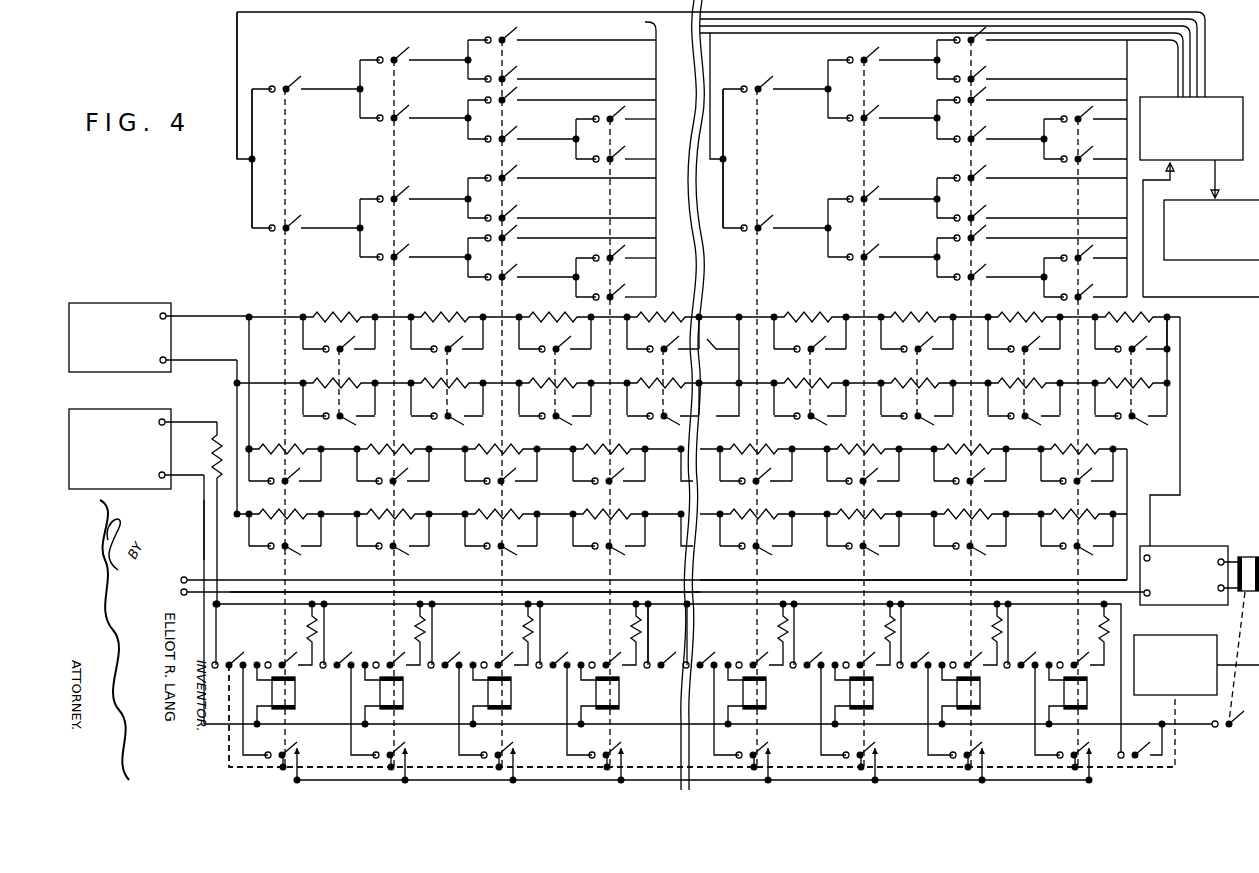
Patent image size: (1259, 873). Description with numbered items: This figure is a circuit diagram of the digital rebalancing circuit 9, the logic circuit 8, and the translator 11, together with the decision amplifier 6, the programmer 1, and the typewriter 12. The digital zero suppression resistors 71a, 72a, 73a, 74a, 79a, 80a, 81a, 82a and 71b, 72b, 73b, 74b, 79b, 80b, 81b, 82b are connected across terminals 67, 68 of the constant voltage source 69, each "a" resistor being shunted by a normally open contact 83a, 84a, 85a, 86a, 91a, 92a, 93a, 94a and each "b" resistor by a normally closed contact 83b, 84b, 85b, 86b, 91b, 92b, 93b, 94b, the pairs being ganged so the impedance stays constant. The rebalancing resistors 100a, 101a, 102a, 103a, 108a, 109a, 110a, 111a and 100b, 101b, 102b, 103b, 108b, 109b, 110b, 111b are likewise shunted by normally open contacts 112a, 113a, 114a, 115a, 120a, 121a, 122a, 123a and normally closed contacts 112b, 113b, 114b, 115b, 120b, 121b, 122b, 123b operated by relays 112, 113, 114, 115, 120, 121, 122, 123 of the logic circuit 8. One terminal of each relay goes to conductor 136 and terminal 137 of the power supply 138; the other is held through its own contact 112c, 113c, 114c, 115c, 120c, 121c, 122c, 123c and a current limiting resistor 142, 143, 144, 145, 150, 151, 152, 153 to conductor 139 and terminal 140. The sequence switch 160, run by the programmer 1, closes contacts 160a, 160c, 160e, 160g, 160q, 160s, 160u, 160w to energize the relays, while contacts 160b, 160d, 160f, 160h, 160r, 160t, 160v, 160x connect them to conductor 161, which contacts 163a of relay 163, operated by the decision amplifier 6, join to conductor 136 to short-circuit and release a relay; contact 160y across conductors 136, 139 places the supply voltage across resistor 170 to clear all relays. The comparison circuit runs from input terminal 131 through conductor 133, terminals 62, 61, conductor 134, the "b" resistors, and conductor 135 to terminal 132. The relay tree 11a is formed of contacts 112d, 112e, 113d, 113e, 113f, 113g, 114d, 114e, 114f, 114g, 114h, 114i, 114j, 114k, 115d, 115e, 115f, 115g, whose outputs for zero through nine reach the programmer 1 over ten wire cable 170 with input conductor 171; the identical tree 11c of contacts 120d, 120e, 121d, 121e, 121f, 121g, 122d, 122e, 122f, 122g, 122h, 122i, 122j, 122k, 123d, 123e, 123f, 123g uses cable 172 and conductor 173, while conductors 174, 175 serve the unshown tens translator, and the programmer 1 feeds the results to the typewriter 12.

The programmer 1 is at (1218, 97).
The decision amplifier 6 is at (1194, 546).
The logic circuit 8 is at (222, 757).
The digital rebalancing circuit 9 is at (252, 548).
The translator 11 is at (214, 65).
The relay tree 11a is at (244, 236).
The relay tree 11c is at (750, 240).
The typewriter 12 is at (1239, 201).
The output terminal 61 is at (184, 576).
The output terminal 62 is at (184, 596).
The terminal 67 is at (168, 314).
The terminal 68 is at (168, 362).
The constant voltage supply 69 is at (110, 303).
The resistor 71a is at (340, 312).
The resistor 72a is at (448, 312).
The resistor 73a is at (556, 312).
The resistor 74a is at (664, 312).
The resistor 79a is at (811, 312).
The resistor 80a is at (918, 312).
The resistor 81a is at (1025, 312).
The resistor 82a is at (1143, 306).
The resistor 71b is at (331, 372).
The resistor 72b is at (439, 372).
The resistor 73b is at (547, 372).
The resistor 74b is at (655, 372).
The resistor 79b is at (802, 372).
The resistor 80b is at (909, 372).
The resistor 81b is at (1016, 372).
The resistor 82b is at (1123, 372).
The normally open relay contact 83a is at (354, 344).
The normally open relay contact 84a is at (462, 344).
The normally open relay contact 85a is at (570, 344).
The normally open relay contact 86a is at (831, 344).
The normally open relay contact 91a is at (825, 344).
The normally open relay contact 92a is at (932, 344).
The normally open relay contact 93a is at (1039, 344).
The normally open relay contact 94a is at (1146, 344).
The normally closed relay contact 83b is at (368, 420).
The normally closed relay contact 84b is at (476, 420).
The normally closed relay contact 85b is at (584, 420).
The normally closed relay contact 86b is at (664, 422).
The normally closed relay contact 91b is at (839, 420).
The normally closed relay contact 92b is at (946, 420).
The normally closed relay contact 93b is at (1053, 420).
The normally closed relay contact 94b is at (1148, 421).
The resistor 100a is at (286, 440).
The resistor 101a is at (394, 440).
The resistor 102a is at (502, 440).
The resistor 103a is at (610, 440).
The resistor 108a is at (757, 440).
The resistor 109a is at (864, 440).
The resistor 110a is at (971, 440).
The resistor 111a is at (1078, 440).
The resistor 100b is at (294, 510).
The resistor 101b is at (402, 510).
The resistor 102b is at (510, 510).
The resistor 103b is at (618, 510).
The resistor 108b is at (765, 510).
The resistor 109b is at (872, 510).
The resistor 110b is at (979, 510).
The resistor 111b is at (1086, 510).
The relay 112 is at (293, 694).
The relay 113 is at (401, 694).
The relay 114 is at (509, 694).
The relay 115 is at (617, 694).
The relay 120 is at (764, 694).
The relay 121 is at (871, 694).
The relay 122 is at (978, 694).
The relay 123 is at (1085, 694).
The normally open relay contact 112a is at (307, 480).
The normally open relay contact 113a is at (415, 480).
The normally open relay contact 114a is at (523, 480).
The normally open relay contact 115a is at (631, 480).
The normally open relay contact 120a is at (778, 480).
The normally open relay contact 121a is at (885, 480).
The normally open relay contact 122a is at (992, 480).
The normally open relay contact 123a is at (1099, 480).
The normally closed relay contact 112b is at (300, 551).
The normally closed relay contact 113b is at (408, 551).
The normally closed relay contact 114b is at (516, 551).
The normally closed relay contact 115b is at (624, 551).
The normally closed relay contact 120b is at (771, 551).
The normally closed relay contact 121b is at (878, 551).
The normally closed relay contact 122b is at (985, 551).
The normally closed relay contact 123b is at (1086, 551).
The relay contact 112c is at (306, 664).
The relay contact 113c is at (414, 664).
The relay contact 114c is at (522, 664).
The relay contact 115c is at (630, 664).
The relay contact 120c is at (777, 664).
The relay contact 121c is at (884, 664).
The relay contact 122c is at (991, 664).
The relay contact 123c is at (1098, 664).
The normally open contact 112d is at (304, 228).
The normally closed contact 112e is at (294, 92).
The normally open contact 113d is at (412, 255).
The normally closed contact 113e is at (412, 200).
The normally open contact 113f is at (412, 116).
The normally closed contact 113g is at (412, 61).
The normally open contact 114d is at (517, 276).
The contact 114e is at (517, 239).
The normally open contact 114f is at (517, 216).
The contact 114g is at (517, 179).
The normally open contact 114h is at (517, 137).
The contact 114i is at (517, 101).
The normally open contact 114j is at (517, 78).
The contact 114k is at (517, 41).
The contact 115d is at (620, 295).
The contact 115e is at (616, 259).
The contact 115f is at (622, 156).
The normally closed contact 115g is at (616, 120).
The contact 120d is at (776, 228).
The contact 120e is at (766, 92).
The contact 121d is at (882, 255).
The contact 121e is at (882, 200).
The contact 121f is at (882, 116).
The contact 121g is at (882, 61).
The contact 122d is at (987, 276).
The contact 122e is at (987, 239).
The contact 122f is at (987, 216).
The contact 122g is at (987, 179).
The contact 122h is at (987, 137).
The contact 122i is at (987, 101).
The contact 122j is at (987, 78).
The contact 122k is at (987, 41).
The contact 123d is at (1090, 295).
The contact 123e is at (1085, 259).
The contact 123f is at (1092, 156).
The contact 123g is at (1085, 120).
The input terminal 131 is at (1149, 596).
The input terminal 132 is at (1150, 556).
The conductor 133 is at (730, 580).
The conductor 134 is at (586, 590).
The conductor 135 is at (1181, 460).
The conductor 136 is at (204, 528).
The terminal 137 is at (166, 478).
The power supply 138 is at (110, 410).
The conductor 139 is at (666, 608).
The terminal 140 is at (166, 421).
The current limiting resistor 142 is at (311, 622).
The current limiting resistor 143 is at (419, 622).
The current limiting resistor 144 is at (527, 622).
The current limiting resistor 145 is at (635, 622).
The current limiting resistor 150 is at (782, 622).
The current limiting resistor 151 is at (889, 622).
The current limiting resistor 152 is at (996, 622).
The current limiting resistor 153 is at (1103, 622).
The sequence switch 160 is at (1201, 646).
The sequence switch contact 160a is at (244, 659).
The sequence switch contact 160b is at (294, 749).
The sequence switch contact 160c is at (352, 659).
The sequence switch contact 160d is at (402, 749).
The sequence switch contact 160e is at (460, 659).
The sequence switch contact 160f is at (510, 749).
The sequence switch contact 160g is at (568, 659).
The sequence switch contact 160h is at (618, 749).
The sequence switch contact 160q is at (715, 659).
The sequence switch contact 160r is at (765, 749).
The sequence switch contact 160s is at (822, 659).
The sequence switch contact 160t is at (872, 749).
The sequence switch contact 160u is at (929, 659).
The sequence switch contact 160v is at (979, 749).
The sequence switch contact 160w is at (1036, 659).
The sequence switch contact 160x is at (1086, 749).
The sequence switch contact 160y is at (1152, 749).
The conductor 161 is at (593, 785).
The relay 163 is at (1244, 557).
The relay contacts 163a is at (1250, 735).
The ten wire cable 170 is at (645, 25).
The conductor 171 is at (342, 14).
The ten wire cable 172 is at (1141, 42).
The conductor 173 is at (768, 35).
The conductor 174 is at (851, 21).
The conductor 175 is at (810, 29).